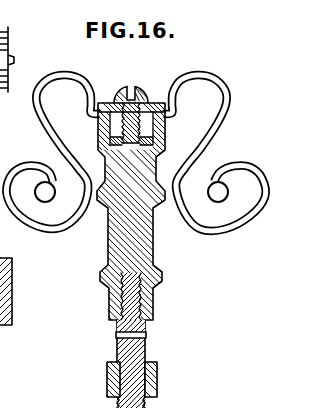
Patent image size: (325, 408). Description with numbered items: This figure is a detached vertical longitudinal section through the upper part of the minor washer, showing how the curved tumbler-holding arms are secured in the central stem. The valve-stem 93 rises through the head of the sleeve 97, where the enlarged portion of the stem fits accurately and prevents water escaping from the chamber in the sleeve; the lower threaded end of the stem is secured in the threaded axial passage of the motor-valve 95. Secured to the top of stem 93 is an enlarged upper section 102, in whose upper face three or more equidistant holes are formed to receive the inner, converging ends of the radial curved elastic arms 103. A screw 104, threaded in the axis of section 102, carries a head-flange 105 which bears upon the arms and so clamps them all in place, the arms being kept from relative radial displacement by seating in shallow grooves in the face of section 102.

The valve-stem 93 is at (143, 346).
The motor-valve 95 is at (17, 291).
The sleeve 97 is at (153, 378).
The enlarged upper section 102 is at (153, 256).
The radial curved elastic arms 103 is at (62, 142).
The screw 104 is at (133, 87).
The head-flange 105 is at (155, 101).